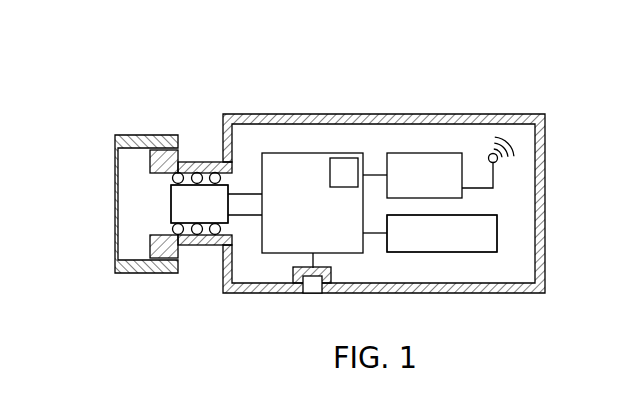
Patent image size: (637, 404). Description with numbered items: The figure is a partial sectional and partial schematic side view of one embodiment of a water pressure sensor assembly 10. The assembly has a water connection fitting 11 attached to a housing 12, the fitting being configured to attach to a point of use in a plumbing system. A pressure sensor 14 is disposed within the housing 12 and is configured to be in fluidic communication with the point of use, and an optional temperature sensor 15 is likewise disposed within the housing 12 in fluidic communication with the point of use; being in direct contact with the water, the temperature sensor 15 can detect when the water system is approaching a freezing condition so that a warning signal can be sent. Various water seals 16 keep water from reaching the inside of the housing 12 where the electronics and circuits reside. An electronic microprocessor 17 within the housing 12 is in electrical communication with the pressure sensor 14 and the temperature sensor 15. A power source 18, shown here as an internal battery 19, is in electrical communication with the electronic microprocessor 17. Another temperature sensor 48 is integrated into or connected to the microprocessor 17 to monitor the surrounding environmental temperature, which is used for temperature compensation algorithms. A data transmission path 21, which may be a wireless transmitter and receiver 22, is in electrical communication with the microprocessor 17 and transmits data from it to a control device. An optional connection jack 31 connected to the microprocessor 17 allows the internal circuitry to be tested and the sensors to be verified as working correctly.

The water pressure sensor assembly 10 is at (98, 66).
The water connection fitting 11 is at (142, 135).
The housing 12 is at (338, 114).
The pressure sensor 14 is at (185, 190).
The temperature sensor 15 is at (185, 190).
The water seals 16 is at (201, 238).
The electronic microprocessor 17 is at (282, 162).
The power source 18 is at (458, 252).
The internal battery 19 is at (458, 252).
The data transmission path 21 is at (433, 153).
The wireless transmitter and receiver 22 is at (433, 153).
The connection jack 31 is at (314, 290).
The temperature sensor 48 is at (200, 190).